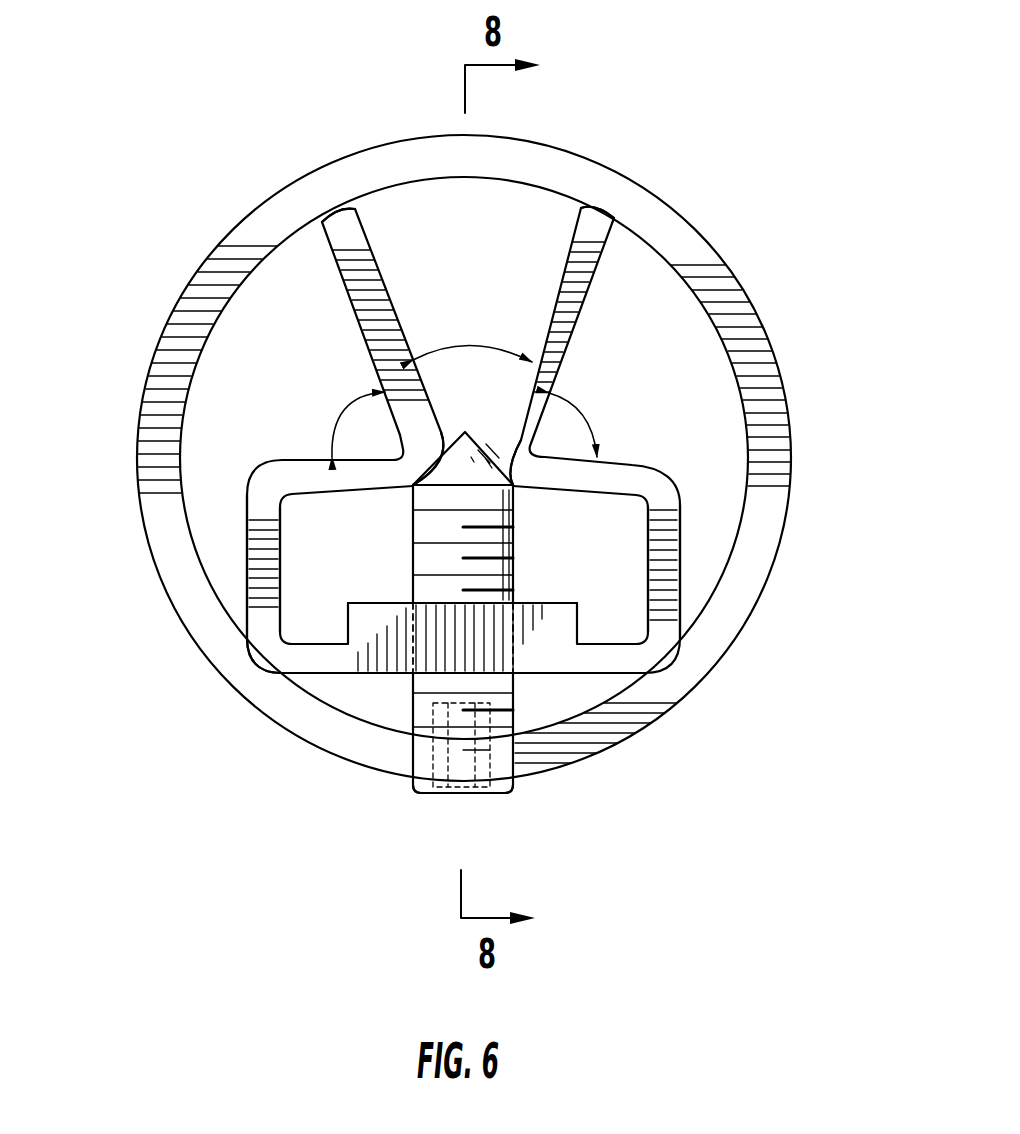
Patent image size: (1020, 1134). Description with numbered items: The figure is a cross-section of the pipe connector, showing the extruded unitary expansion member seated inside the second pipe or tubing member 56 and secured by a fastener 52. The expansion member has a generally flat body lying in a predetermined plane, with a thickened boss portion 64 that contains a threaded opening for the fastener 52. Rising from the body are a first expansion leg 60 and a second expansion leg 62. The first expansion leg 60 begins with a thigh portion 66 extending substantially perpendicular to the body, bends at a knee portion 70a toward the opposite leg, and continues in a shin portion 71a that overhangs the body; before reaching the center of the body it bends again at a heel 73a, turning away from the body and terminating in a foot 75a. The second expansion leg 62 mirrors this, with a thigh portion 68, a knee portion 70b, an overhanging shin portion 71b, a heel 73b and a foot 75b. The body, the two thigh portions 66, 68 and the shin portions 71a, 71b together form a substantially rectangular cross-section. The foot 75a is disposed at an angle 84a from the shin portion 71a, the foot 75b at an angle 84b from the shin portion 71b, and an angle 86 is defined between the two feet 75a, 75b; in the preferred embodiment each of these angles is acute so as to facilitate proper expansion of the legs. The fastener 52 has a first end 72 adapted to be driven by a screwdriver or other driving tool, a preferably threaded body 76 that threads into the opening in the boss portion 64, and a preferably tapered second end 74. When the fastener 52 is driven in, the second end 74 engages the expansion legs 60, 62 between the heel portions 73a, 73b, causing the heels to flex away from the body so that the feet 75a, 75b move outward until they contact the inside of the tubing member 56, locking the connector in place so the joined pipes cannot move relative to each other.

The fastener 52 is at (522, 692).
The second pipe or tubing member 56 is at (742, 590).
The first expansion leg 60 is at (567, 316).
The second expansion leg 62 is at (348, 270).
The boss portion 64 is at (368, 660).
The thigh portion 66 is at (660, 622).
The thigh portion 68 is at (258, 615).
The knee portion 70a is at (623, 480).
The knee portion 70b is at (290, 468).
The shin portion 71a is at (572, 478).
The shin portion 71b is at (318, 472).
The first end 72 is at (470, 795).
The heel 73a is at (493, 453).
The heel 73b is at (410, 460).
The second end 74 is at (480, 453).
The foot 75a is at (592, 215).
The foot 75b is at (366, 210).
The body 76 is at (497, 548).
The angle 84a is at (591, 430).
The angle 84b is at (346, 420).
The angle 86 is at (467, 346).